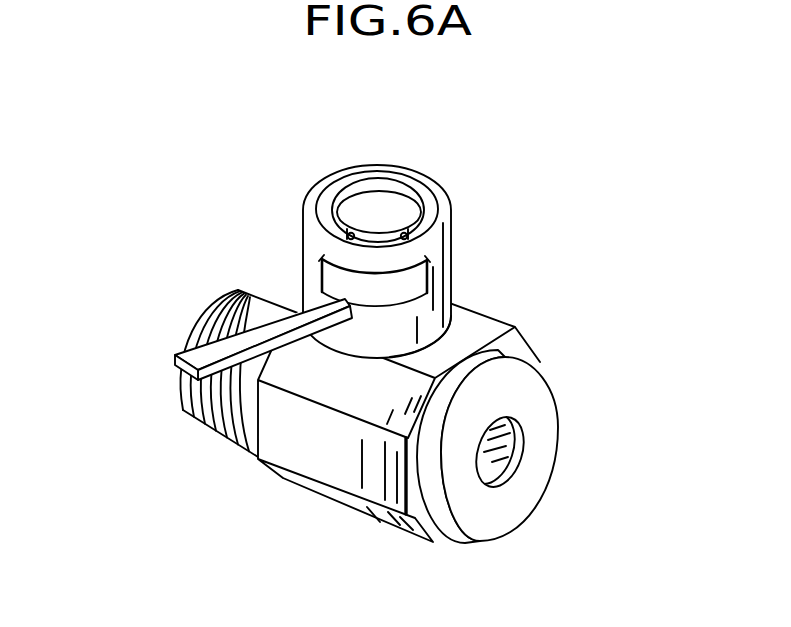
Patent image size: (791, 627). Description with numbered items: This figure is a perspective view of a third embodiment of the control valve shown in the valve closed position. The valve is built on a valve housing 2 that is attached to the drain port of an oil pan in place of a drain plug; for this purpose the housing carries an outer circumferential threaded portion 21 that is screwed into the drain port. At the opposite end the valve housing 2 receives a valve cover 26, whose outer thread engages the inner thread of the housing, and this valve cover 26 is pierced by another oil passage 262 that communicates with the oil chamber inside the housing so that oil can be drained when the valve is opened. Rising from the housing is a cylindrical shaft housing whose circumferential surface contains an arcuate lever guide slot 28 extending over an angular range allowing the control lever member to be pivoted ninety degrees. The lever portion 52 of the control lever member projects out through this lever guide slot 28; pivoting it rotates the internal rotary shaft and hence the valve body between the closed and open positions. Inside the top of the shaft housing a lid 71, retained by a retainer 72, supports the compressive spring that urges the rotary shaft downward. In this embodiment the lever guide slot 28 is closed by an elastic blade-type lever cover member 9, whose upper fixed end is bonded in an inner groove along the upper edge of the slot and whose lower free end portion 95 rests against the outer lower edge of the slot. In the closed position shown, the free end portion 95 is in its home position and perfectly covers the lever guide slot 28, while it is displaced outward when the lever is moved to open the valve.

The valve housing 2 is at (358, 512).
The lever cover member 9 is at (412, 288).
The outer circumferential threaded portion 21 is at (218, 295).
The valve cover 26 is at (522, 505).
The oil passage 262 is at (508, 449).
The lever guide slot 28 is at (445, 205).
The lever portion 52 is at (175, 355).
The lid 71 is at (393, 209).
The retainer 72 is at (352, 190).
The free end portion 95 is at (407, 308).